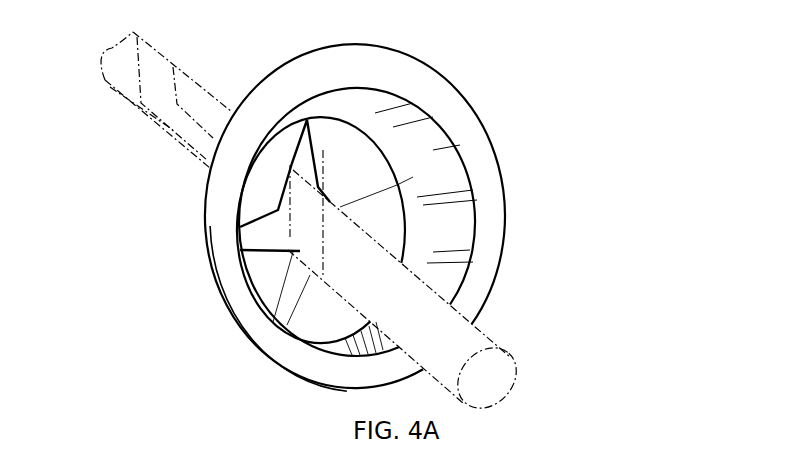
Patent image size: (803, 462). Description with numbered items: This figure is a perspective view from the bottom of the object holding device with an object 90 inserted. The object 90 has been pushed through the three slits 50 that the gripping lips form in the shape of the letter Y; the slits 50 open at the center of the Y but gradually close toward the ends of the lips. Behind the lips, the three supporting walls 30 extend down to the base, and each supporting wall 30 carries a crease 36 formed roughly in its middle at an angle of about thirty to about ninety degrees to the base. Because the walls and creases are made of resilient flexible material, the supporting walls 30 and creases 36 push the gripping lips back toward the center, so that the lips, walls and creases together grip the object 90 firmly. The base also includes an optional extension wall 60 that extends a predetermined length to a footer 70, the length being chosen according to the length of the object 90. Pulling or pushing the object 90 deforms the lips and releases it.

The supporting wall 30 is at (372, 183).
The crease 36 is at (340, 207).
The slit 50 is at (318, 168).
The extension wall 60 is at (432, 152).
The footer 70 is at (490, 210).
The object 90 is at (498, 369).